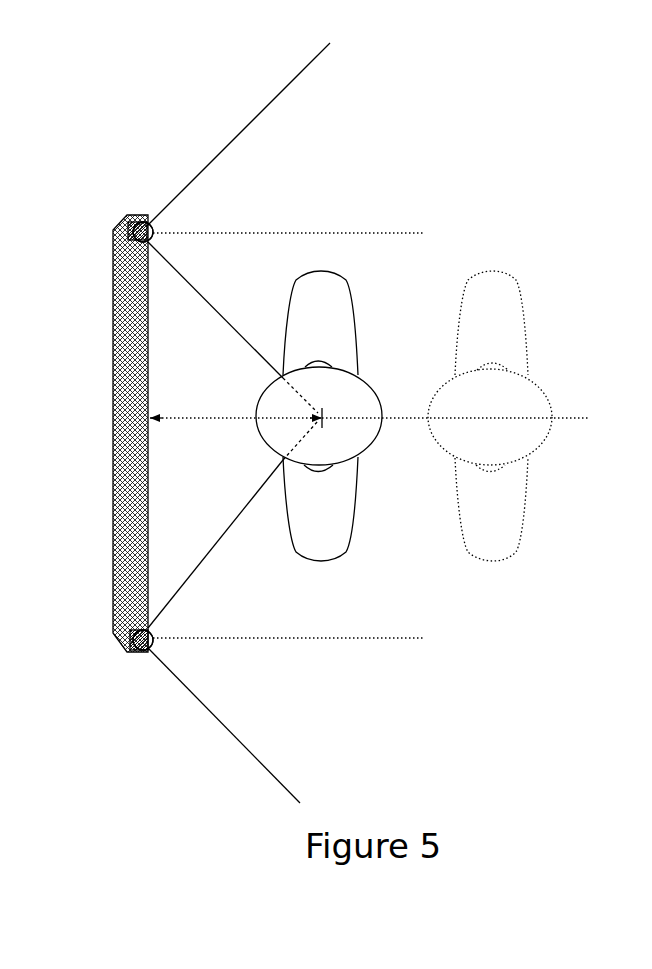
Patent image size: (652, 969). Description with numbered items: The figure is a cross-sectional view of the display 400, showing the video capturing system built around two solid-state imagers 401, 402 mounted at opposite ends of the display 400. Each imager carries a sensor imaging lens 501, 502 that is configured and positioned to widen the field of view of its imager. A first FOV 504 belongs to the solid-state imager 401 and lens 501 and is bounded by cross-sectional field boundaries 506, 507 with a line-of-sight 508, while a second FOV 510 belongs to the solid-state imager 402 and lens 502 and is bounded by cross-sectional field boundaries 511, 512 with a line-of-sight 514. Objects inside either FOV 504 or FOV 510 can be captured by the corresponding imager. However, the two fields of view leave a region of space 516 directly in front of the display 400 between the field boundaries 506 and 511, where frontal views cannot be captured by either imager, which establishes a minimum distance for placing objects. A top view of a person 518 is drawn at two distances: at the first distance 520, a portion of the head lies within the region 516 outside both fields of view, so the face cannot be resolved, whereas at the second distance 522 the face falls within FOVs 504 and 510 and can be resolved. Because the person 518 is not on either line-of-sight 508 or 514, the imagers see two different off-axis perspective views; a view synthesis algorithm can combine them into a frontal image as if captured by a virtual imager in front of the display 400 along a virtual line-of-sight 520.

The display 400 is at (136, 200).
The solid-state imager 401 is at (128, 648).
The solid-state imager 402 is at (126, 224).
The sensor imaging lens 501 is at (152, 645).
The sensor imaging lens 502 is at (150, 243).
The first FOV 504 is at (363, 734).
The cross-sectional field boundary 506 is at (210, 555).
The cross-sectional field boundary 507 is at (228, 729).
The line-of-sight 508 is at (393, 642).
The second FOV 510 is at (393, 141).
The cross-sectional field boundary 511 is at (222, 316).
The cross-sectional field boundary 512 is at (244, 108).
The line-of-sight 514 is at (393, 235).
The region of space 516 is at (236, 449).
The person 518 is at (340, 538).
The first distance 520 is at (366, 314).
The second distance 522 is at (541, 314).